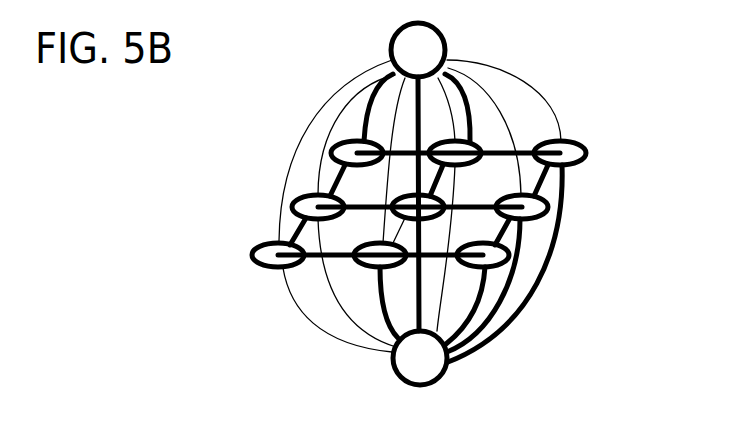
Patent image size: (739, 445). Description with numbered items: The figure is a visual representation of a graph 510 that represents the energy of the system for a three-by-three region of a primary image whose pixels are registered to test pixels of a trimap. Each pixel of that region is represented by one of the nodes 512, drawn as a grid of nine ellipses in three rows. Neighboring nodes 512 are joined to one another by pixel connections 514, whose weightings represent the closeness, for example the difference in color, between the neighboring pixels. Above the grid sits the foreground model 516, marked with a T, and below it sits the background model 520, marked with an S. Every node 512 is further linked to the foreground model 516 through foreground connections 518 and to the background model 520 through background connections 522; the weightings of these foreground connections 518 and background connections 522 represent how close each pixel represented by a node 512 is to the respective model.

The graph 510 is at (566, 55).
The nodes 512 is at (269, 251).
The pixel connections 514 is at (293, 220).
The foreground model 516 is at (393, 32).
The foreground connections 518 is at (290, 163).
The background model 520 is at (410, 386).
The background connections 522 is at (293, 316).